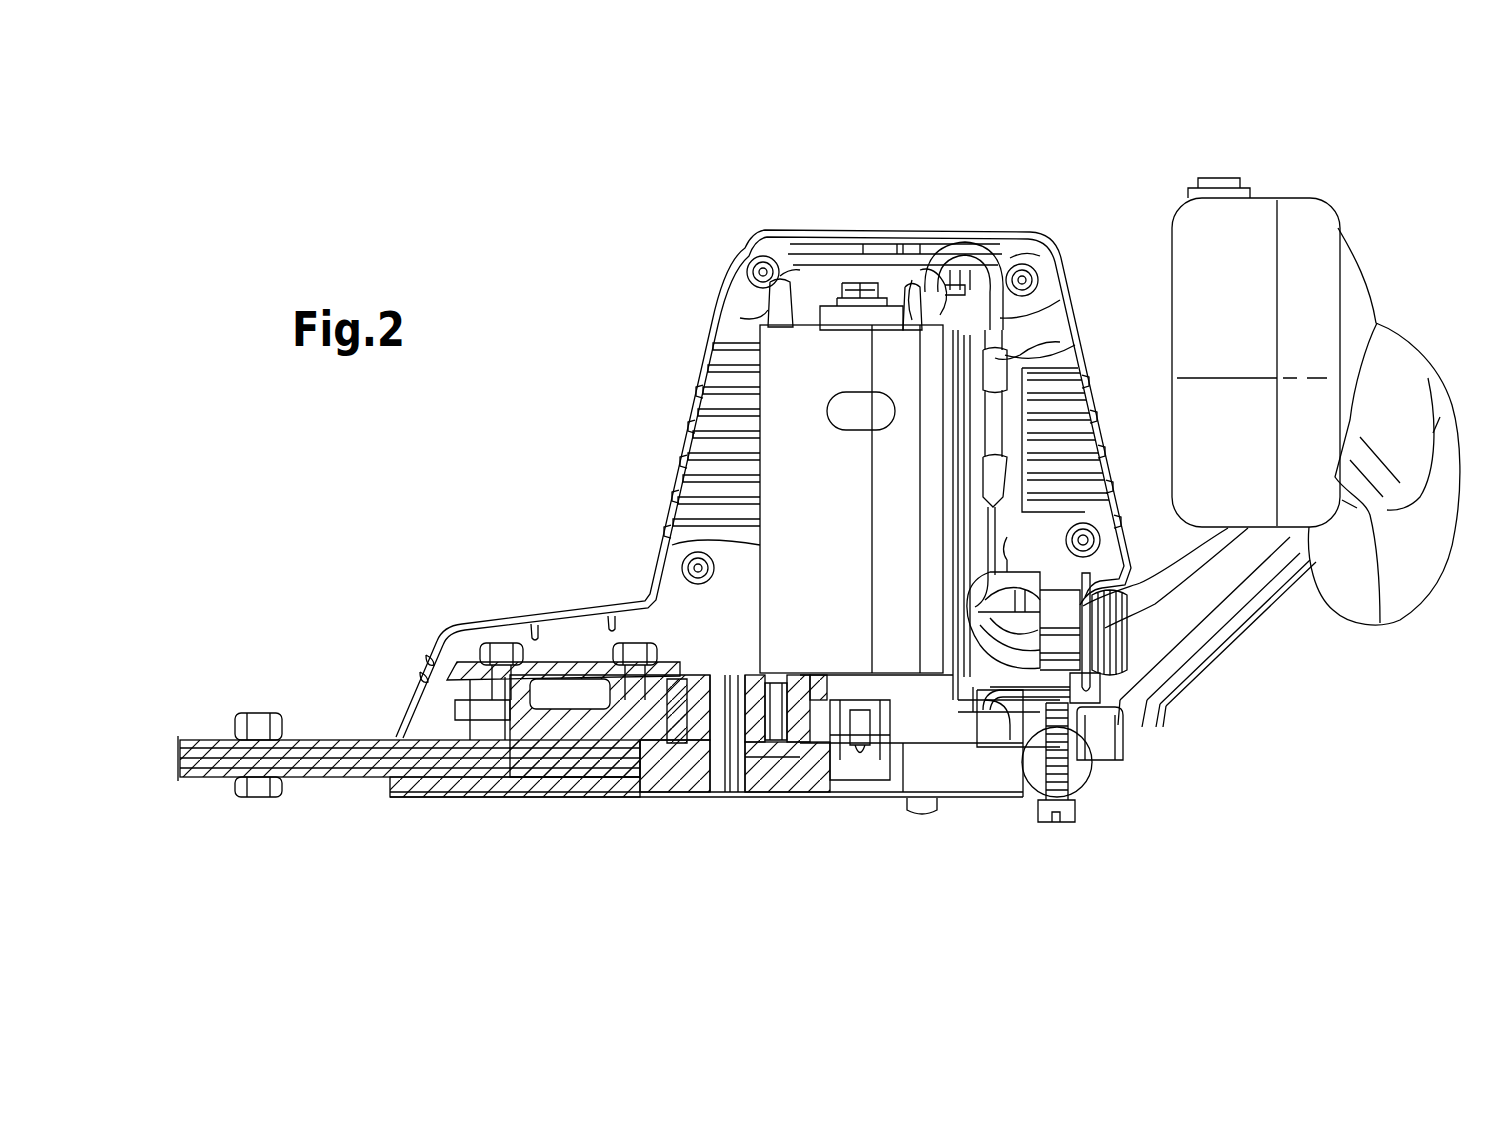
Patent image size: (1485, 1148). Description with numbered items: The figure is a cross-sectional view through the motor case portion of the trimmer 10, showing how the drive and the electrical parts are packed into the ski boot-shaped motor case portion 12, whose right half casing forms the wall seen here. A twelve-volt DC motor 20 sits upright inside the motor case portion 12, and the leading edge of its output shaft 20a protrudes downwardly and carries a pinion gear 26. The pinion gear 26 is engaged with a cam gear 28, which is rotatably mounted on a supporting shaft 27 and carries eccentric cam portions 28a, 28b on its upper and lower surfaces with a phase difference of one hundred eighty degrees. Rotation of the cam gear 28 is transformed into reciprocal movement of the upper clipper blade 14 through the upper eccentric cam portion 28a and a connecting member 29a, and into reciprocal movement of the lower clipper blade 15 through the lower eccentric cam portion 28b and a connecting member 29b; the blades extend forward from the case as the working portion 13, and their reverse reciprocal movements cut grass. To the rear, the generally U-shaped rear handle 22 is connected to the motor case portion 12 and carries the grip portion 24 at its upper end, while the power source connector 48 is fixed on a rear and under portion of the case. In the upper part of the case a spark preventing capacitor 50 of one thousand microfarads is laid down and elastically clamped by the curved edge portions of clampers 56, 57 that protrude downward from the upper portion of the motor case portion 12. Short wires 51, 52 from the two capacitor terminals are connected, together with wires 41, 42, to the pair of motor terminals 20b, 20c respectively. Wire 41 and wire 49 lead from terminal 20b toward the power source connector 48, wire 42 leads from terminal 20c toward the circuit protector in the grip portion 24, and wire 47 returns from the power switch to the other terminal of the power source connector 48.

The trimmer 10 is at (1082, 204).
The motor case portion 12 is at (737, 245).
The working portion 13 is at (308, 730).
The upper clipper blade 14 is at (201, 778).
The lower clipper blade 15 is at (310, 770).
The DC motor 20 is at (775, 555).
The output shaft 20a is at (857, 753).
The terminal 20b is at (766, 312).
The terminal 20c is at (1068, 348).
The rear handle 22 is at (1232, 641).
The grip portion 24 is at (1386, 330).
The pinion gear 26 is at (883, 793).
The supporting shaft 27 is at (717, 780).
The cam gear 28 is at (767, 780).
The upper eccentric cam portion 28a is at (690, 755).
The lower eccentric cam portion 28b is at (803, 793).
The connecting member 29a is at (580, 753).
The connecting member 29b is at (677, 780).
The wire 41 is at (781, 268).
The wire 42 is at (992, 260).
The wire 47 is at (1092, 525).
The power source connector 48 is at (1128, 668).
The wire 49 is at (1007, 537).
The spark preventing capacitor 50 is at (1078, 316).
The wire 51 is at (834, 252).
The wire 52 is at (915, 258).
The clamper 56 is at (897, 326).
The clamper 57 is at (1045, 256).